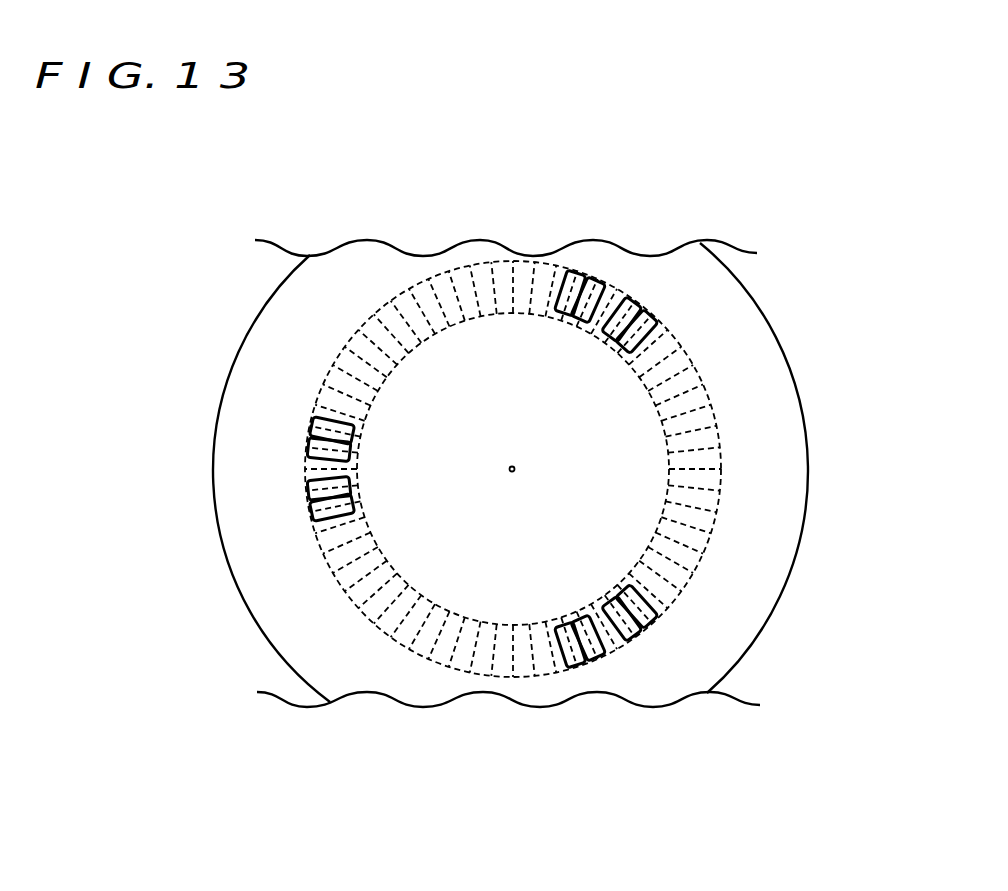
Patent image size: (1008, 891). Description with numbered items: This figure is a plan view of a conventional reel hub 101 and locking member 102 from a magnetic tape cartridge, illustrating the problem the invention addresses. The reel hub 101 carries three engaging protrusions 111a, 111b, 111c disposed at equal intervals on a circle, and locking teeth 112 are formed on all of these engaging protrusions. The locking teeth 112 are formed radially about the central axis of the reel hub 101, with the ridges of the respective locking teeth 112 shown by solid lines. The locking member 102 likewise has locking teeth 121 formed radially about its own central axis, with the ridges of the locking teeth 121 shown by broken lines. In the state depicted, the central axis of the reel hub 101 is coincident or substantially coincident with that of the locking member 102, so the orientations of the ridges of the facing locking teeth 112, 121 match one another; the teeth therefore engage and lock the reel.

The reel hub 101 is at (802, 577).
The locking member 102 is at (740, 474).
The engaging protrusion 111a is at (307, 497).
The engaging protrusion 111b is at (603, 656).
The engaging protrusion 111c is at (568, 277).
The locking teeth 112 is at (355, 431).
The locking teeth 121 is at (663, 416).